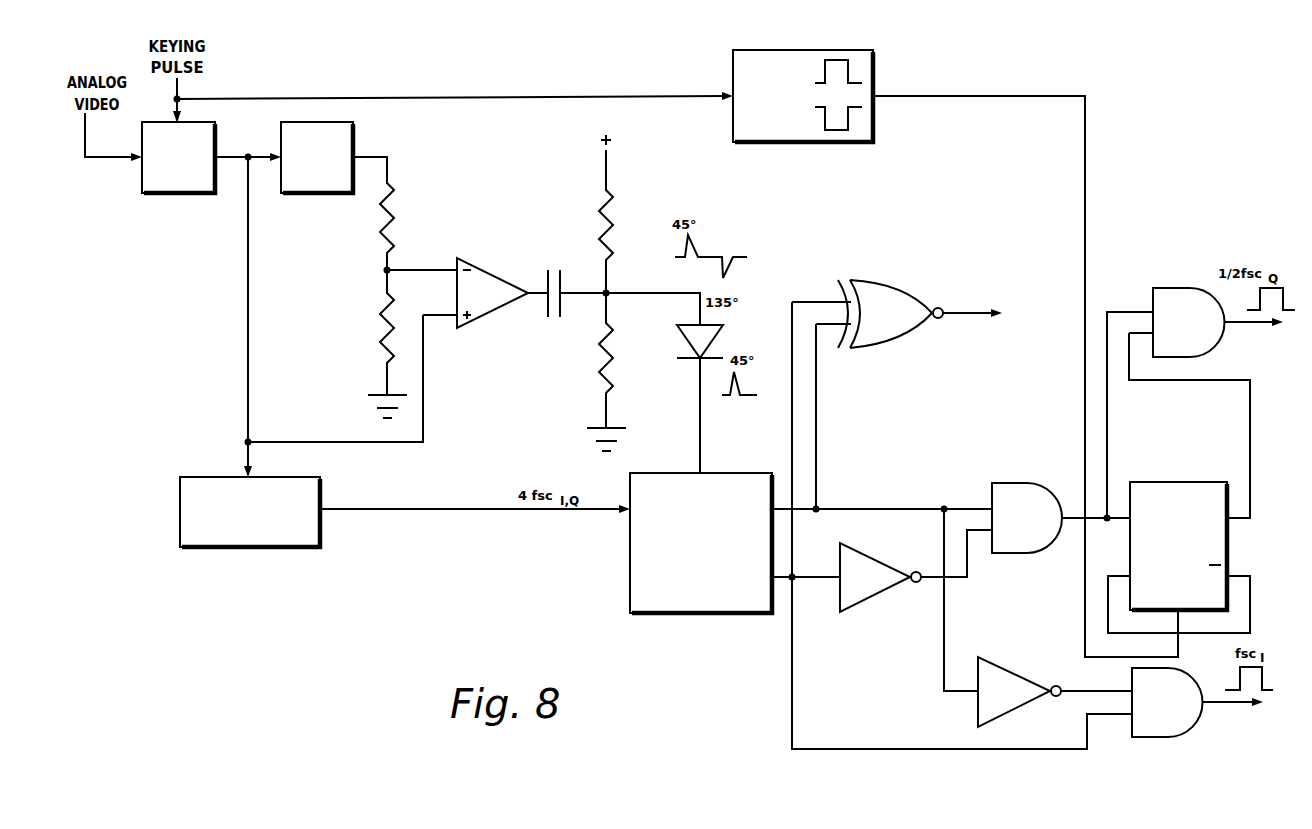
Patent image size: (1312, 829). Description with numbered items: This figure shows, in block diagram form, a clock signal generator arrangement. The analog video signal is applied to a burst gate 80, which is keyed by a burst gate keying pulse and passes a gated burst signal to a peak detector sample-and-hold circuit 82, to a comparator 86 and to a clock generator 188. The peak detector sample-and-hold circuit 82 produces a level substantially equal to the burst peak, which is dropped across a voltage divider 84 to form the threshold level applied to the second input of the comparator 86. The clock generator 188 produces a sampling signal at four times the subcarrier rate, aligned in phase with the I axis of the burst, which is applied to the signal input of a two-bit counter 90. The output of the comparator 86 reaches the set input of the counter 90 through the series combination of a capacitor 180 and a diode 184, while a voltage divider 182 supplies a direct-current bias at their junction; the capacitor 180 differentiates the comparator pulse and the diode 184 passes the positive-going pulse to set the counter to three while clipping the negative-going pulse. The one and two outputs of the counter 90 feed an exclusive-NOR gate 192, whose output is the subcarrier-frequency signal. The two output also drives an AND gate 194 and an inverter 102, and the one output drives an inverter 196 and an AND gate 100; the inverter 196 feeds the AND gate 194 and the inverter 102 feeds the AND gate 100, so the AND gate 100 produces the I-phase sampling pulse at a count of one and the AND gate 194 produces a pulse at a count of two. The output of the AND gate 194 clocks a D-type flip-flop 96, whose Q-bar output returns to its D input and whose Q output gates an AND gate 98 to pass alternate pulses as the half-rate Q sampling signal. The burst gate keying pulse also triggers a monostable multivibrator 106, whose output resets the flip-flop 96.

The burst gate 80 is at (165, 193).
The peak detector sample-and-hold circuit 82 is at (303, 193).
The voltage divider 84 is at (441, 221).
The comparator 86 is at (485, 267).
The capacitor 180 is at (557, 262).
The voltage divider 182 is at (667, 330).
The diode 184 is at (682, 340).
The monostable multivibrator 106 is at (788, 143).
The exclusive-NOR gate 192 is at (887, 280).
The 2-bit counter 90 is at (630, 555).
The inverter 196 is at (890, 565).
The AND gate 194 is at (1010, 483).
The AND gate 98 is at (1165, 288).
The D-type flip-flop 96 is at (1172, 482).
The inverter 102 is at (1015, 657).
The AND gate 100 is at (1183, 735).
The clock generator 188 is at (183, 477).